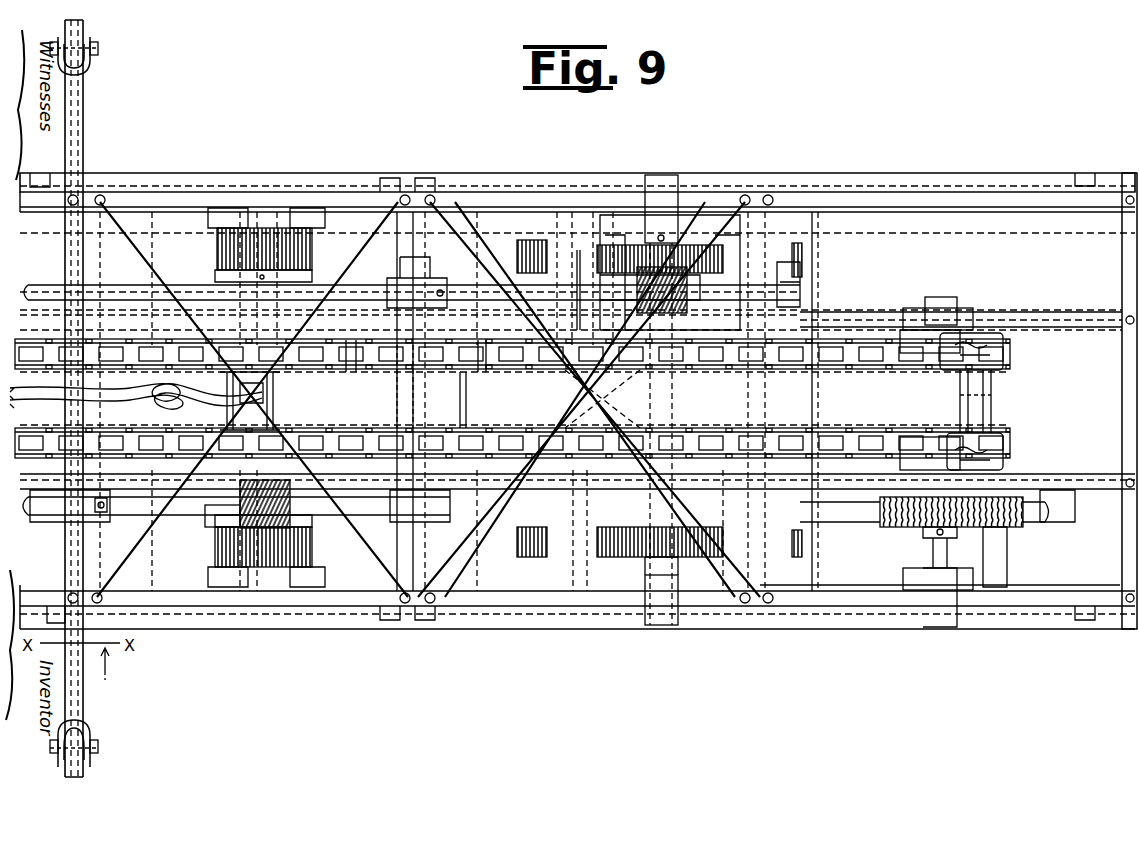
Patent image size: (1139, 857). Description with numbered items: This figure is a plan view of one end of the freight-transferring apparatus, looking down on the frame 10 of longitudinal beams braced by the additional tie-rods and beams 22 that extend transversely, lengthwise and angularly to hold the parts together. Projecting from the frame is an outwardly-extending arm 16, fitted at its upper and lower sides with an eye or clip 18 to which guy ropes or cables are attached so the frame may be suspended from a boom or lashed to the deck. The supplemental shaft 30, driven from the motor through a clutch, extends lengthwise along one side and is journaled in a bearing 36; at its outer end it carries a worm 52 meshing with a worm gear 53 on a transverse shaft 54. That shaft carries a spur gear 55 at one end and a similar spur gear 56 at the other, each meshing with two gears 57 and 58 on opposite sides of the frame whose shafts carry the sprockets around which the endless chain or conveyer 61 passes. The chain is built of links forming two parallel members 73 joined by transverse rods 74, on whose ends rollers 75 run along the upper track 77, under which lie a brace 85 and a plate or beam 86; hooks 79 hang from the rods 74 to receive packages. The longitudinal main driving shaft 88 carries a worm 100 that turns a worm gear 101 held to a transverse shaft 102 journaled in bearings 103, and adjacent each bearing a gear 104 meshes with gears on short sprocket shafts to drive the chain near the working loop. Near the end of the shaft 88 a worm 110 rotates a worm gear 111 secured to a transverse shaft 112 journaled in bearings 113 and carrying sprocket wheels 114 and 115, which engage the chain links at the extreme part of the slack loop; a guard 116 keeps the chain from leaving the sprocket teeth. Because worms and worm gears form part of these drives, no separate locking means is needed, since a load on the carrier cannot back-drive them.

The frame 10 is at (505, 600).
The outwardly-extending arm 16 is at (83, 135).
The eye or clip 18 is at (104, 720).
The tie-rods and beams 22 is at (125, 555).
The supplemental shaft 30 is at (98, 290).
The bearing 36 is at (800, 292).
The worm 52 is at (715, 333).
The worm gear 53 is at (612, 320).
The shaft 54 is at (660, 175).
The spur gear 55 is at (633, 246).
The spur gear 56 is at (630, 560).
The gear 57 is at (802, 258).
The gear 58 is at (802, 545).
The endless chain or conveyer 61 is at (805, 369).
The parallel member 73 is at (350, 372).
The rod 74 is at (992, 416).
The roller 75 is at (858, 438).
The upper track 77 is at (482, 372).
The hook 79 is at (172, 388).
The brace 85 is at (418, 398).
The plate or beam 86 is at (970, 395).
The main driving shaft 88 is at (205, 520).
The worm 100 is at (208, 560).
The worm gear 101 is at (240, 520).
The transverse shaft 102 is at (262, 315).
The bearing 103 is at (212, 218).
The gear 104 is at (312, 555).
The worm 110 is at (930, 538).
The worm gear 111 is at (880, 515).
The transverse shaft 112 is at (945, 297).
The bearing 113 is at (903, 578).
The sprocket wheel 114 is at (930, 432).
The sprocket wheel 115 is at (925, 370).
The guard 116 is at (1003, 355).